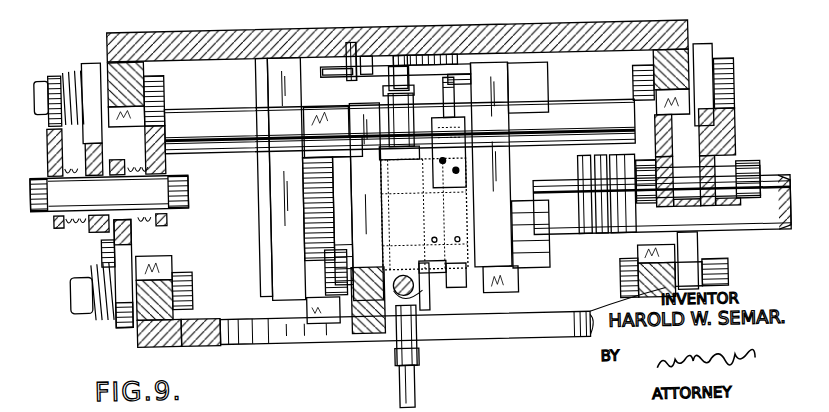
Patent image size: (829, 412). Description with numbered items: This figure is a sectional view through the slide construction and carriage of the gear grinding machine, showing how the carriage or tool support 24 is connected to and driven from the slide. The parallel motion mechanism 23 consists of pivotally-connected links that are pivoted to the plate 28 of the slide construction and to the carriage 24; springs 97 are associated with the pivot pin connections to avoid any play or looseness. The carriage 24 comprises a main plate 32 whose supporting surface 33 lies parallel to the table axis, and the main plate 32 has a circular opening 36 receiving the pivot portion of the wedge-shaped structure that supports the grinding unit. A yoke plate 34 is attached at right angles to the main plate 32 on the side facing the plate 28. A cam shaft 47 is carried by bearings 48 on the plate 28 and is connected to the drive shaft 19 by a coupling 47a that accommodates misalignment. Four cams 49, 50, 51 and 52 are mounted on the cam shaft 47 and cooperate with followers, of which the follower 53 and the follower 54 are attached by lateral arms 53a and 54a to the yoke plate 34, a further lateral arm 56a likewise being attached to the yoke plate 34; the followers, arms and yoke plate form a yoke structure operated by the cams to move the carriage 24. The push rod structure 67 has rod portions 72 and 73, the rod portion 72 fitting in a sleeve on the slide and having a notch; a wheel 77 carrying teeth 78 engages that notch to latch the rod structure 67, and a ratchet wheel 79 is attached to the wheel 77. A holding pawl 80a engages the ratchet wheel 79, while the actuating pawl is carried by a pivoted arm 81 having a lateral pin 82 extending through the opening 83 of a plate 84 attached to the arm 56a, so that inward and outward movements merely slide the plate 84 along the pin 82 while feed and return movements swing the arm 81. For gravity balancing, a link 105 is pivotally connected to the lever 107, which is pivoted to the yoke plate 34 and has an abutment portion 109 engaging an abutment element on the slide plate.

The drive shaft 19 is at (770, 188).
The parallel motion mechanism 23 is at (737, 127).
The carriage or tool support 24 is at (134, 322).
The plate 28 is at (250, 35).
The main plate 32 is at (190, 345).
The supporting surface 33 is at (153, 348).
The yoke plate 34 is at (367, 109).
The circular opening 36 is at (215, 337).
The cam shaft 47 is at (539, 192).
The coupling 47a is at (584, 268).
The bearings 48 is at (262, 290).
The cam 49 is at (338, 233).
The cam 50 is at (298, 229).
The cam 51 is at (424, 290).
The cam 52 is at (451, 287).
The follower 53 is at (334, 296).
The lateral arm 53a is at (311, 322).
The follower 54 is at (316, 145).
The lateral arm 54a is at (322, 123).
The lateral arm 56a is at (454, 235).
The push rod structure 67 is at (393, 163).
The rod portion 72 is at (391, 120).
The rod portion 73 is at (402, 398).
The wheel 77 is at (440, 62).
The teeth 78 is at (366, 62).
The ratchet wheel 79 is at (404, 62).
The holding pawl 80a is at (328, 72).
The pivoted arm 81 is at (462, 81).
The lateral pin 82 is at (455, 100).
The opening 83 is at (468, 126).
The plate 84 is at (465, 156).
The springs 97 is at (88, 268).
The link 105 is at (404, 318).
The lever 107 is at (408, 350).
The abutment portion 109 is at (396, 367).